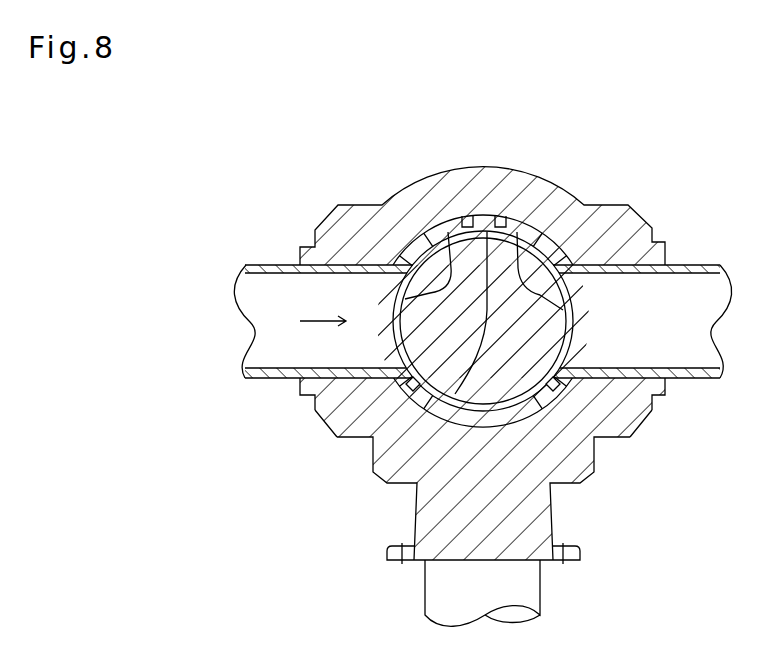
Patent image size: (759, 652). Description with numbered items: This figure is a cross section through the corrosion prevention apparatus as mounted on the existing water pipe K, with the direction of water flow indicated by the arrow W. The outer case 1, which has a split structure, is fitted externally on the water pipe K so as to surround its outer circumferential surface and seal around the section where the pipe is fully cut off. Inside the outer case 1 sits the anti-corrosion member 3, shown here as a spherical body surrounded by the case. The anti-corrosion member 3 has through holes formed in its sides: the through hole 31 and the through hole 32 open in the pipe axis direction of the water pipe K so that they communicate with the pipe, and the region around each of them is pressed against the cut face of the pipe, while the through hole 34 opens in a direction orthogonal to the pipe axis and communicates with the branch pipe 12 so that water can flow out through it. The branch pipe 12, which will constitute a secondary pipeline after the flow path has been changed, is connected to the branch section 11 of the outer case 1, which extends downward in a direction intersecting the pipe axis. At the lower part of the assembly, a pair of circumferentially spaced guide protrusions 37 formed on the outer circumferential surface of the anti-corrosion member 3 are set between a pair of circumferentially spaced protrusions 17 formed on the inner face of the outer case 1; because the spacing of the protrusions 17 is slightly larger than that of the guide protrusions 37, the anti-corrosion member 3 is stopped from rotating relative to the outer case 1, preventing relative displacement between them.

The outer case 1 is at (582, 204).
The anti-corrosion member 3 is at (432, 233).
The branch section 11 is at (413, 528).
The branch pipe 12 is at (425, 588).
The protrusions 17 is at (333, 421).
The through hole 31 is at (448, 232).
The through hole 32 is at (525, 232).
The through hole 34 is at (487, 232).
The guide protrusions 37 is at (414, 400).
The water pipe K is at (246, 380).
The flow direction W is at (309, 320).